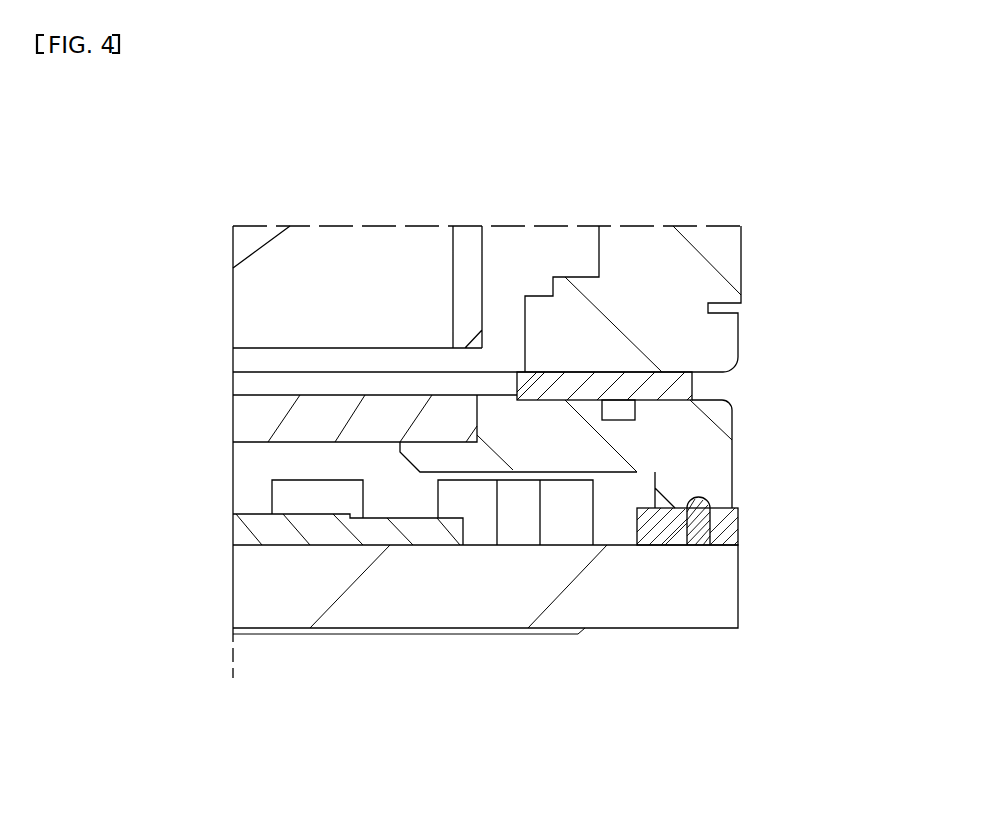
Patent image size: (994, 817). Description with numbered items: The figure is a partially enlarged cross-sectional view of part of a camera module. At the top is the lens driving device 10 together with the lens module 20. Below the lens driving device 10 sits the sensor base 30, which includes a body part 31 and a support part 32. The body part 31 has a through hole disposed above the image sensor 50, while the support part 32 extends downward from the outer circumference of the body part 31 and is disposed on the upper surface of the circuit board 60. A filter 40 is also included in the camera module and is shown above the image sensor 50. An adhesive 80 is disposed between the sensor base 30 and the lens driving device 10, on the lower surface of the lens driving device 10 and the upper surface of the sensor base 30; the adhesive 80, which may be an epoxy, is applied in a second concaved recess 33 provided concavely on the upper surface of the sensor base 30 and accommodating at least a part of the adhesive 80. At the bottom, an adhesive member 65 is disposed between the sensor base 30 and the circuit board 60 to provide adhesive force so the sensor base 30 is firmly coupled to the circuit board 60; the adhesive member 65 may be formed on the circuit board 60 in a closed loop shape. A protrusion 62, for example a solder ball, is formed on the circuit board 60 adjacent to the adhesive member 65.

The lens driving device 10 is at (693, 277).
The lens module 20 is at (470, 257).
The sensor base 30 is at (680, 710).
The body part 31 is at (553, 437).
The support part 32 is at (655, 455).
The second concaved recess 33 is at (622, 403).
The filter 40 is at (263, 422).
The image sensor 50 is at (255, 522).
The circuit board 60 is at (375, 607).
The protrusion 62 is at (701, 535).
The adhesive member 65 is at (732, 518).
The adhesive 80 is at (660, 383).